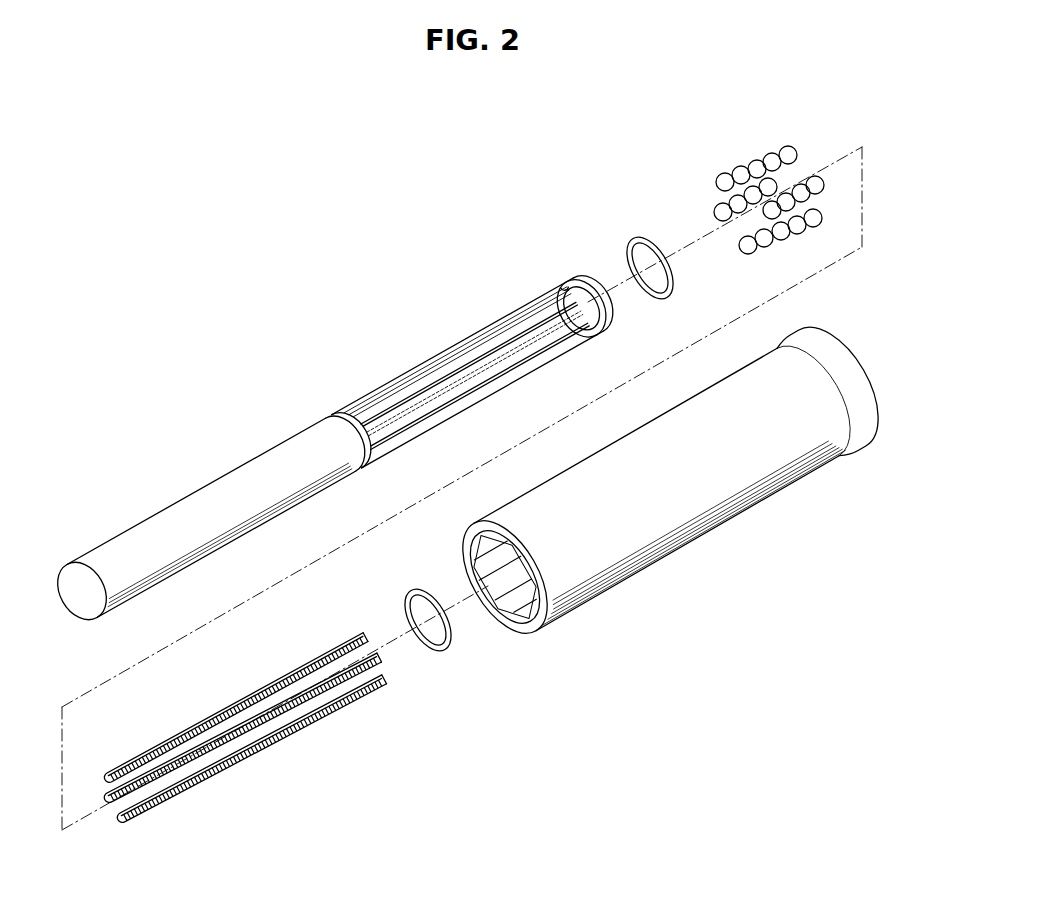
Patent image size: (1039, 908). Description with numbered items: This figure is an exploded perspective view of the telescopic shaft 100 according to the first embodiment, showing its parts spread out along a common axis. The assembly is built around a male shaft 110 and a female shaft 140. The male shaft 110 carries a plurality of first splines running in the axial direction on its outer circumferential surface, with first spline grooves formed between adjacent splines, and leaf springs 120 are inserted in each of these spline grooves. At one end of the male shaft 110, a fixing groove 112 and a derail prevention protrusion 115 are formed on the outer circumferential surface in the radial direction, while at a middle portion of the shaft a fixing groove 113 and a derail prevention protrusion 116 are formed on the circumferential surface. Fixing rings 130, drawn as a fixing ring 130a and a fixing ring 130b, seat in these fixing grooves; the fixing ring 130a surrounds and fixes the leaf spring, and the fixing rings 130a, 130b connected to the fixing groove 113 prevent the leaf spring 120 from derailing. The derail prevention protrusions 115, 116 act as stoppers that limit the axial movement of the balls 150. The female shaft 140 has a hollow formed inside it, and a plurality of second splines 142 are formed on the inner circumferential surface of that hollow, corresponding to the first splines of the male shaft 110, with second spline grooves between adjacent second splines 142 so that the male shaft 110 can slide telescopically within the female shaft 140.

The telescopic shaft 100 is at (295, 201).
The male shaft 110 is at (212, 466).
The fixing groove 112 is at (590, 284).
The fixing groove 113 is at (350, 428).
The derail prevention protrusion 115 is at (572, 279).
The derail prevention protrusion 116 is at (322, 417).
The leaf spring 120 is at (287, 742).
The fixing rings 130 is at (538, 444).
The fixing ring 130a is at (414, 588).
The fixing ring 130b is at (649, 298).
The female shaft 140 is at (735, 531).
The second splines 142 is at (492, 592).
The balls 150 is at (744, 165).